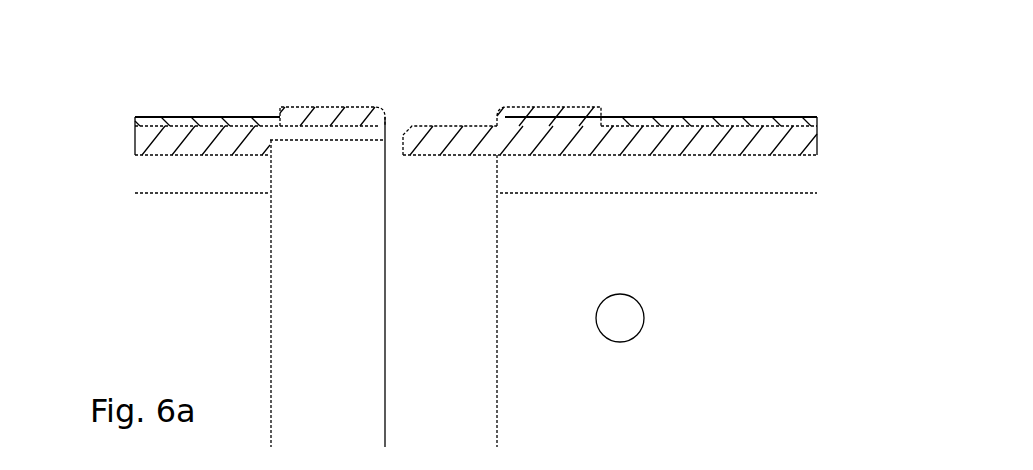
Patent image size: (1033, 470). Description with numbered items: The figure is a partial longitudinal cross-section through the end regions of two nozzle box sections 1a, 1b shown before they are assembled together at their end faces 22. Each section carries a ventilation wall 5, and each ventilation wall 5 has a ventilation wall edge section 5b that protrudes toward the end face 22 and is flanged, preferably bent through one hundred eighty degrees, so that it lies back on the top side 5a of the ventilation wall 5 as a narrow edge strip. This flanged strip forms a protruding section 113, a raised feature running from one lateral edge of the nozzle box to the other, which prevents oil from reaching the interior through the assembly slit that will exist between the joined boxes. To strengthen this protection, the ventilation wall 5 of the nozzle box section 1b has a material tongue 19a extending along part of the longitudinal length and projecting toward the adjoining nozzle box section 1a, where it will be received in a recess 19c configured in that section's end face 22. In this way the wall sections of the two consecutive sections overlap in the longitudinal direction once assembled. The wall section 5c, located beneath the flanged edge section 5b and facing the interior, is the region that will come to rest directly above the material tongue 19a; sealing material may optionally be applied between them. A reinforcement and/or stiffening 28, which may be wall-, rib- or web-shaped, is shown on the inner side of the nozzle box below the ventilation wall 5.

The ventilation wall 5 is at (727, 120).
The top side of the ventilation wall 5a is at (174, 106).
The ventilation wall edge section 5b is at (335, 101).
The wall section 5c is at (316, 131).
The protruding section 113 is at (546, 105).
The reinforcement and/or stiffening 28 is at (172, 144).
The nozzle box section 1a is at (211, 286).
The nozzle box section 1b is at (612, 256).
The material tongue 19a is at (466, 160).
The recess 19c is at (333, 165).
The end face 22 is at (468, 355).